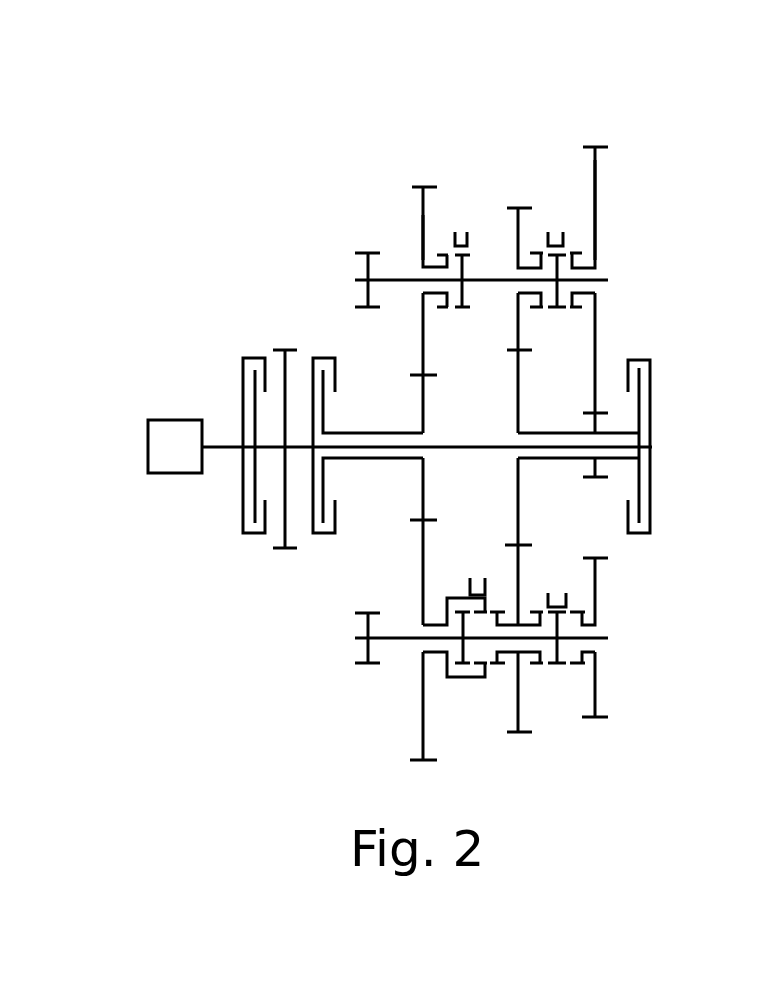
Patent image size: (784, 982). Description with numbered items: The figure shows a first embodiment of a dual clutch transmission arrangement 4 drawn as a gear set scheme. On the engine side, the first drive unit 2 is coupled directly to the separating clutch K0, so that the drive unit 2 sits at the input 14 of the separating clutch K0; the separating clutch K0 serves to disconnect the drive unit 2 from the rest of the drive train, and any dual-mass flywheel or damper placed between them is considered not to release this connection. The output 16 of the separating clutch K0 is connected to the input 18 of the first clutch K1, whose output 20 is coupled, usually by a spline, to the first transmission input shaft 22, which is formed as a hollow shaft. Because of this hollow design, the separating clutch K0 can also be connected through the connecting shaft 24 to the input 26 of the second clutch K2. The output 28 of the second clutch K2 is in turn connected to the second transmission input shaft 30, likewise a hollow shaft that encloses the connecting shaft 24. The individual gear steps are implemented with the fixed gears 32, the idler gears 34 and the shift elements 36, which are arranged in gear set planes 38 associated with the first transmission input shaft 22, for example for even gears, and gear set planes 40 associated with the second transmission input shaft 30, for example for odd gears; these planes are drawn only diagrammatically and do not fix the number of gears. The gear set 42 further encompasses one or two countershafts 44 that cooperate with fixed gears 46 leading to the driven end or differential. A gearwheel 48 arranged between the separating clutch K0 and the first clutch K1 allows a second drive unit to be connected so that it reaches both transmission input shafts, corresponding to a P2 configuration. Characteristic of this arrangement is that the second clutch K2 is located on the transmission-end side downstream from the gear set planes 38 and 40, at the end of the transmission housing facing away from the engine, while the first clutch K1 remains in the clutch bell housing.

The first drive unit 2 is at (167, 475).
The dual clutch transmission arrangement 4 is at (699, 121).
The input of the separating clutch 14 is at (242, 448).
The output of the separating clutch 16 is at (268, 445).
The input of the first clutch 18 is at (302, 442).
The connecting element 20 is at (350, 432).
The first transmission input shaft 22 is at (398, 432).
The connecting shaft 24 is at (473, 446).
The input of the second clutch 26 is at (652, 447).
The output of the second clutch 28 is at (642, 393).
The second transmission input shaft 30 is at (550, 432).
The fixed gears 32 is at (520, 507).
The idler gears 34 is at (421, 228).
The shift elements 36 is at (552, 222).
The gear set planes 38 is at (422, 150).
The gear set planes 40 is at (518, 140).
The gear set 42 is at (320, 155).
The countershafts 44 is at (608, 278).
The fixed gears 46 is at (365, 268).
The gearwheel 48 is at (282, 537).
The separating clutch K0 is at (255, 357).
The first clutch K1 is at (323, 357).
The second clutch K2 is at (640, 358).